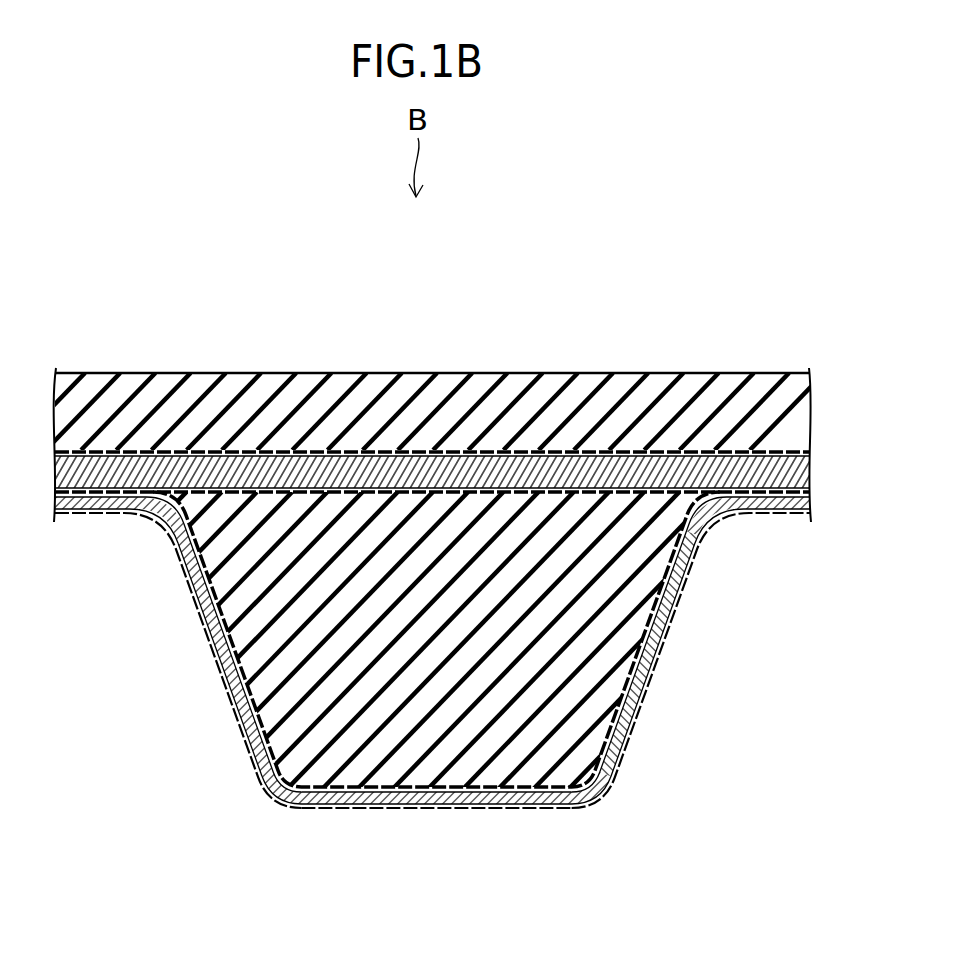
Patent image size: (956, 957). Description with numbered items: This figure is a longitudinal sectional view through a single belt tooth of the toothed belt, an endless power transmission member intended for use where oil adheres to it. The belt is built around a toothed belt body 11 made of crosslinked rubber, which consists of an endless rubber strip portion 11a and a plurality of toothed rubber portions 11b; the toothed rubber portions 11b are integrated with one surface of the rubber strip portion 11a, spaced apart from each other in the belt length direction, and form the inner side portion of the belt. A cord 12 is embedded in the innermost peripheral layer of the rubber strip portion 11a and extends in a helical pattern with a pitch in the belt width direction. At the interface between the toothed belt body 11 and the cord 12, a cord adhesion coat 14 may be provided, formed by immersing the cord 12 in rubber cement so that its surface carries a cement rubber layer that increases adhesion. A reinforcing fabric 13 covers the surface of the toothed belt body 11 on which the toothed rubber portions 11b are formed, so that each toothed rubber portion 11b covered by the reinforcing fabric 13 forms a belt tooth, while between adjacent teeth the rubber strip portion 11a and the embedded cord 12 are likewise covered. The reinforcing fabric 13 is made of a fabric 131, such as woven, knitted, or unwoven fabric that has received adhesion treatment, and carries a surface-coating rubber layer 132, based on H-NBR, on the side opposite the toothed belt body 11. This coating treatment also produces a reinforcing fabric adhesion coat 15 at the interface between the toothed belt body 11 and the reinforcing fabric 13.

The toothed belt body 11 is at (438, 648).
The rubber strip portion 11a is at (432, 648).
The toothed rubber portion 11b is at (432, 692).
The cord 12 is at (417, 473).
The reinforcing fabric 13 is at (523, 875).
The fabric 131 is at (414, 797).
The surface-coating rubber layer 132 is at (482, 808).
The cord adhesion coat 14 is at (177, 493).
The reinforcing fabric adhesion coat 15 is at (250, 736).